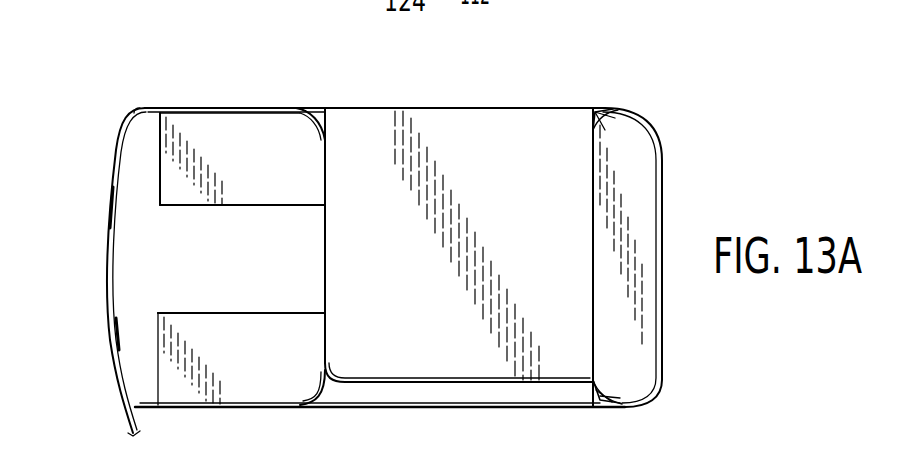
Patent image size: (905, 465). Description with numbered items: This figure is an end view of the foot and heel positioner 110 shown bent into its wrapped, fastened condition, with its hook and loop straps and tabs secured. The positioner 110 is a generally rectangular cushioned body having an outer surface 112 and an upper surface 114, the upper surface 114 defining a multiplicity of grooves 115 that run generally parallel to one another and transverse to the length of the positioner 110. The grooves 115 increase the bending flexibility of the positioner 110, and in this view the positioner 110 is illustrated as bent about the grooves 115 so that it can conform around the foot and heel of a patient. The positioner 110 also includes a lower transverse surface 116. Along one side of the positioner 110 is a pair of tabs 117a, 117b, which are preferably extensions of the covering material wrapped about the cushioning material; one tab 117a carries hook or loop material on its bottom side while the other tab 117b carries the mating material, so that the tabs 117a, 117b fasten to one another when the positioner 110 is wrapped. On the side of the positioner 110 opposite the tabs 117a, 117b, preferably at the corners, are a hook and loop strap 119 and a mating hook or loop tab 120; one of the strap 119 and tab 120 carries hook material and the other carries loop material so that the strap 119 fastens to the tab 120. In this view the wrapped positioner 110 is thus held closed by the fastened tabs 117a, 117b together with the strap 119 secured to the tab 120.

The foot and heel positioner 110 is at (170, 82).
The outer surface 112 is at (240, 122).
The upper surface 114 is at (256, 207).
The grooves 115 is at (606, 110).
The lower transverse surface 116 is at (286, 105).
The tab 117a is at (513, 393).
The tab 117b is at (440, 118).
The hook and loop strap 119 is at (113, 232).
The tab 120 is at (122, 328).